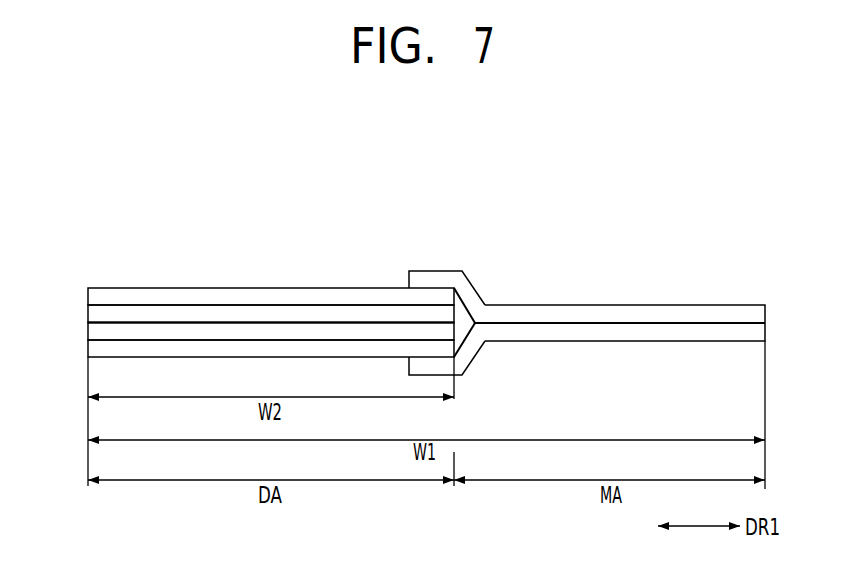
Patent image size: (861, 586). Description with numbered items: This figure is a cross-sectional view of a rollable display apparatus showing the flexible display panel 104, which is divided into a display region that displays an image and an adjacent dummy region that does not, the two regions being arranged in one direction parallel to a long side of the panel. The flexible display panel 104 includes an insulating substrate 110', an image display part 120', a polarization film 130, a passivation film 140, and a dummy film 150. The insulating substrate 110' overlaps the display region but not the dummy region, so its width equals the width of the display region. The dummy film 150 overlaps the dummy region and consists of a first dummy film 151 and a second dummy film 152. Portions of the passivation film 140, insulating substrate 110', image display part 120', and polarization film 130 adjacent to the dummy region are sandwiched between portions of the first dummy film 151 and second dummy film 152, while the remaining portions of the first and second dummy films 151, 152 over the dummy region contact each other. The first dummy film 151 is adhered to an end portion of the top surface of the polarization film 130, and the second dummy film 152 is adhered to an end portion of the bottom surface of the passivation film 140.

The flexible display panel 104 is at (737, 244).
The insulating substrate 110' is at (228, 334).
The image display part 120' is at (228, 307).
The polarization film 130 is at (98, 297).
The passivation film 140 is at (98, 350).
The dummy film 150 is at (700, 232).
The first dummy film 151 is at (577, 312).
The second dummy film 152 is at (672, 330).